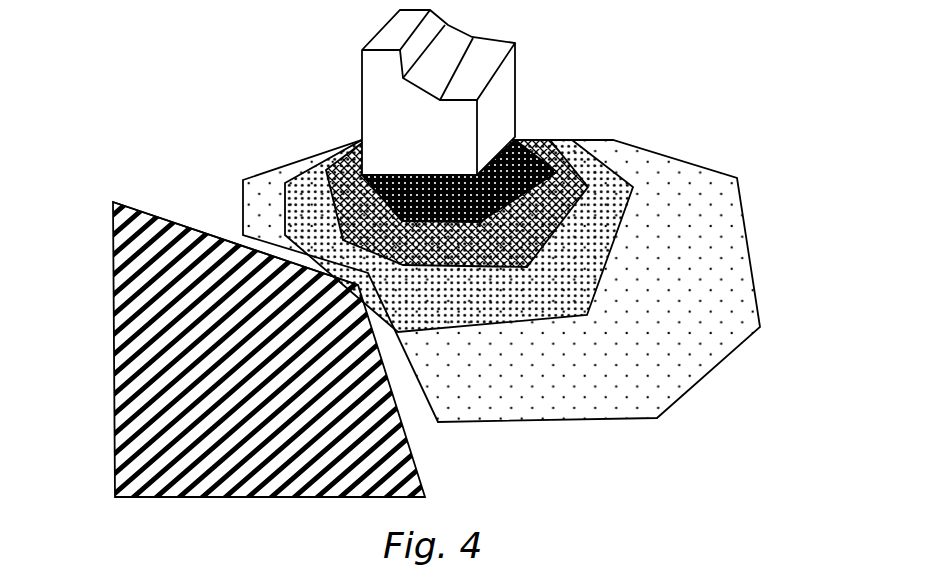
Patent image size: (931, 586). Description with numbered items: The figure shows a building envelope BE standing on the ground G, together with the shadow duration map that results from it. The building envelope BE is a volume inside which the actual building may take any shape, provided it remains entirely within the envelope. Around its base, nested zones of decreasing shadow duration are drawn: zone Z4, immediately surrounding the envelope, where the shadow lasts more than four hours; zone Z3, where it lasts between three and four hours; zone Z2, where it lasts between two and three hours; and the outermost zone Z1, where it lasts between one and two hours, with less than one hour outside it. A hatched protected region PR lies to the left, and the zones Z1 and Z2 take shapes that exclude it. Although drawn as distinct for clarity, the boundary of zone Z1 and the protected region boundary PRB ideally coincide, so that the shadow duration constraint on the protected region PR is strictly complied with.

The building envelope BE is at (517, 57).
The zone Z1 is at (697, 190).
The zone Z2 is at (628, 188).
The zone Z3 is at (555, 137).
The zone Z4 is at (523, 135).
The protected region PR is at (137, 242).
The protected region boundary PRB is at (150, 212).
The ground G is at (507, 481).